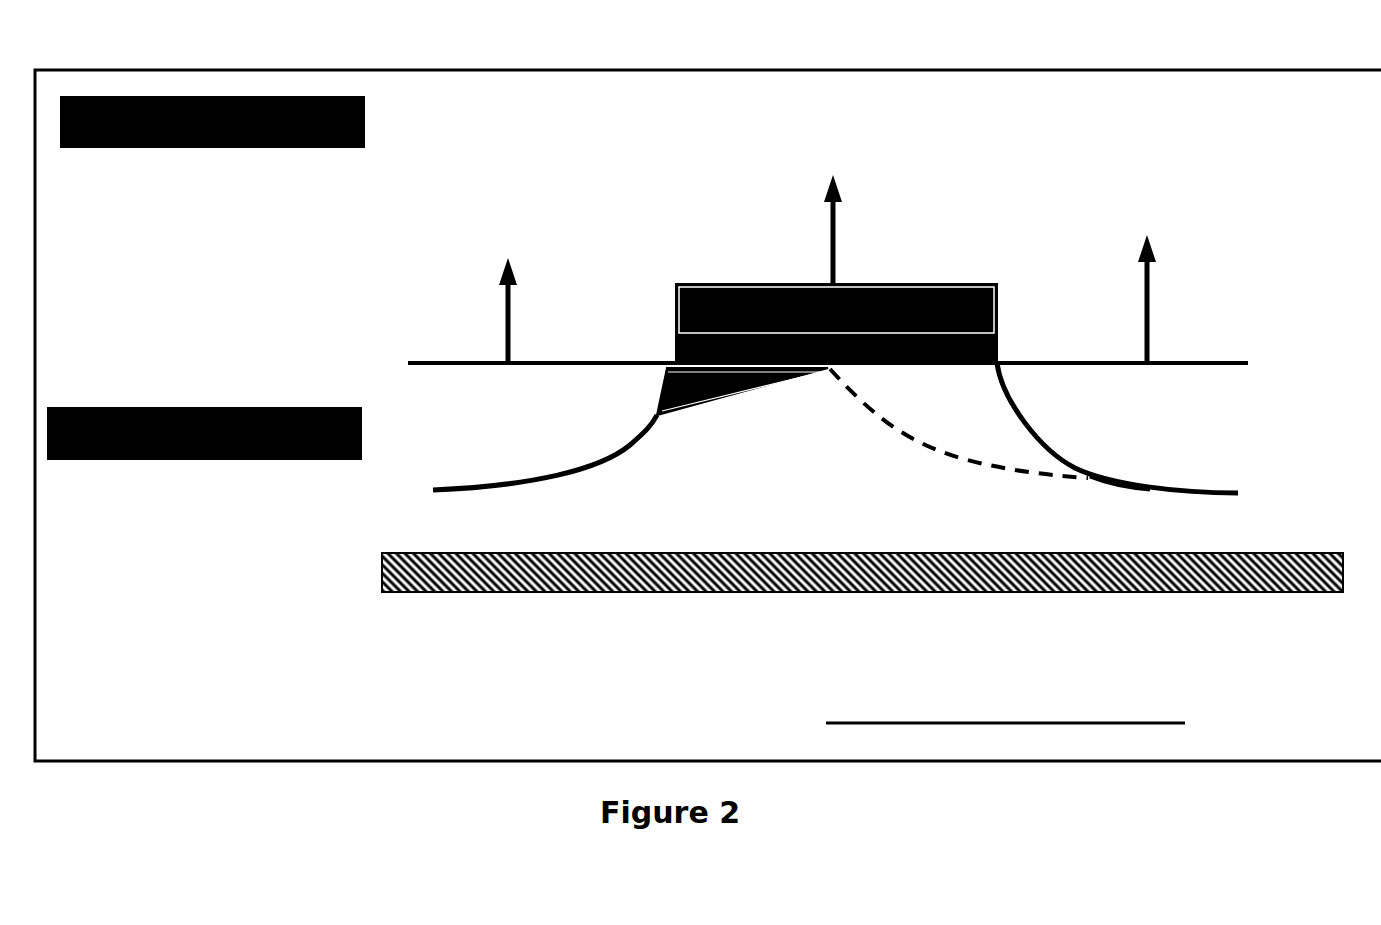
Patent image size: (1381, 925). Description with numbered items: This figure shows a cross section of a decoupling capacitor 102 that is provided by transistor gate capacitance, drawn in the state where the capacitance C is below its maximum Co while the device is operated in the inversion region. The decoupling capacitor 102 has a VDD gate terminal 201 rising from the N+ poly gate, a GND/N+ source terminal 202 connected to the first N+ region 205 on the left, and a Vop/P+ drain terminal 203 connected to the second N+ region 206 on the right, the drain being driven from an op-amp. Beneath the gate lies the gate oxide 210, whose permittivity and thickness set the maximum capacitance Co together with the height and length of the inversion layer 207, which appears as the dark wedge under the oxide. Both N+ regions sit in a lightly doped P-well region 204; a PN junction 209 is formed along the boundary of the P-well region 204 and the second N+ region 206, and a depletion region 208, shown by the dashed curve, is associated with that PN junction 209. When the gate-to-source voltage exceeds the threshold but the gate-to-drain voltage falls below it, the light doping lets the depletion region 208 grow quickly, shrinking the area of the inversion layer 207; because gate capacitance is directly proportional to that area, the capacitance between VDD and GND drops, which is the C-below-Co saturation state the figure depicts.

The decoupling capacitor 102 is at (708, 388).
The gate terminal 201 is at (812, 203).
The source terminal 202 is at (494, 278).
The drain terminal 203 is at (1163, 262).
The P-well region 204 is at (762, 454).
The first N+ region 205 is at (470, 466).
The second N+ region 206 is at (1185, 464).
The inversion layer 207 is at (686, 416).
The depletion region 208 is at (968, 424).
The PN junction 209 is at (1122, 493).
The gate oxide 210 is at (668, 340).